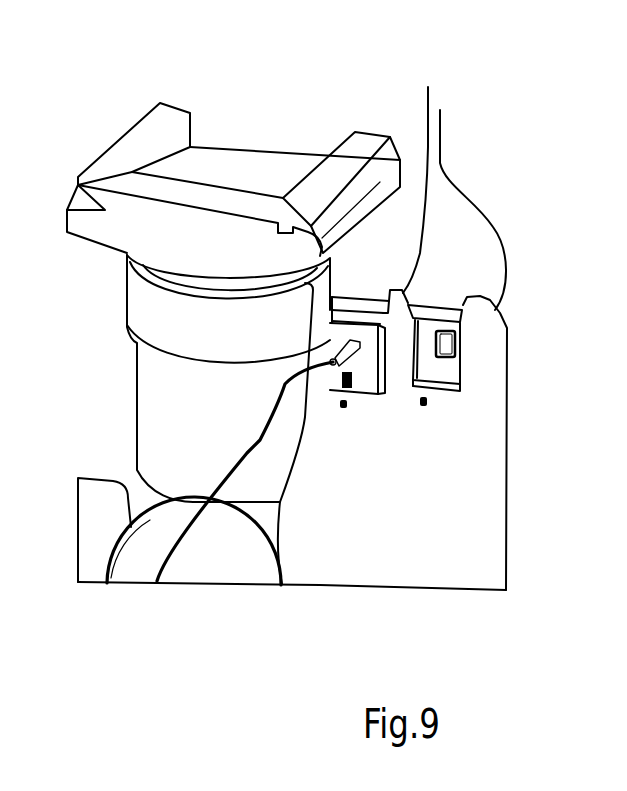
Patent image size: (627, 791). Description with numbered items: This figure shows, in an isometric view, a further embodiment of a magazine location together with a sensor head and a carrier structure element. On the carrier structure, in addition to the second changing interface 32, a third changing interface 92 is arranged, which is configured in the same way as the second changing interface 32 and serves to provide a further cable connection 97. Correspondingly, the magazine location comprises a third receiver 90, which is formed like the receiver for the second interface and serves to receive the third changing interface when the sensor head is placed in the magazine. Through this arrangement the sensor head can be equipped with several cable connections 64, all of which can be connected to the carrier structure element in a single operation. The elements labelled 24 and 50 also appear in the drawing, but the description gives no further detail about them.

The sensor module 24 is at (360, 383).
The second changing interface 32 is at (356, 297).
The housing 50 is at (137, 397).
The cable connection 64 is at (173, 553).
The third receiver 90 is at (447, 393).
The third changing interface 92 is at (443, 306).
The further cable connection 97 is at (498, 235).